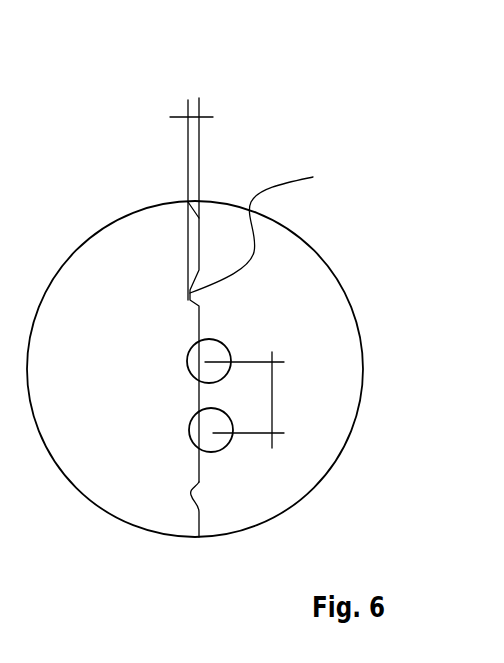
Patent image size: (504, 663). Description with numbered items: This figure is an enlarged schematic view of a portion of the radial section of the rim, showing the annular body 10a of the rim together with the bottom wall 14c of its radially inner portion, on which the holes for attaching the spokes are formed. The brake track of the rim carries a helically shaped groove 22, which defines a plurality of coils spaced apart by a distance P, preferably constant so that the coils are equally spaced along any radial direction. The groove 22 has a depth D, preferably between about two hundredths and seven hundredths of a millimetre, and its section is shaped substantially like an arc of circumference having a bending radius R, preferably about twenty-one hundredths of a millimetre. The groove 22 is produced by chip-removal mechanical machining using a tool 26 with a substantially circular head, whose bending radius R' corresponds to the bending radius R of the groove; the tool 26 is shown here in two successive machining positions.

The annular body 10a is at (97, 259).
The bottom wall 14c is at (40, 0).
The helically shaped groove 22 is at (265, 218).
The tool 26 is at (215, 350).
The depth D is at (190, 112).
The distance P is at (272, 407).
The bending radius of tool R' is at (228, 393).
The bending radius R is at (241, 542).